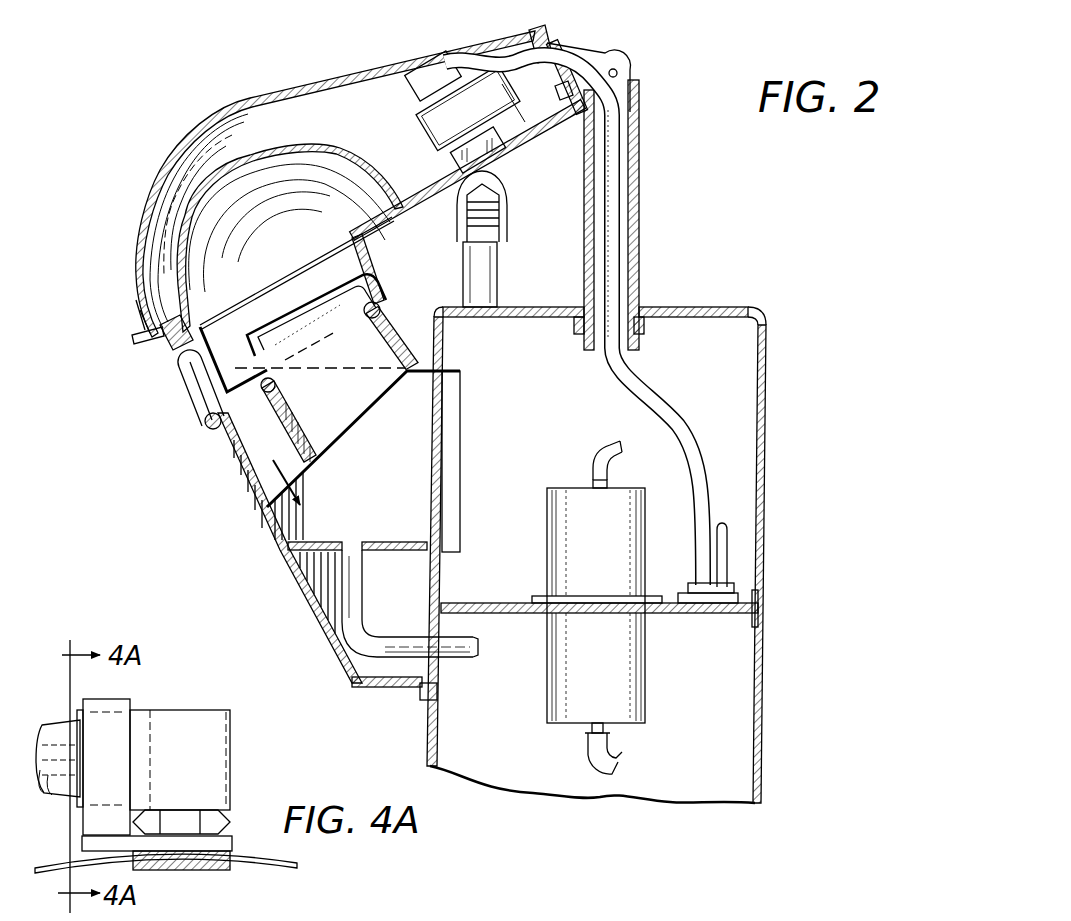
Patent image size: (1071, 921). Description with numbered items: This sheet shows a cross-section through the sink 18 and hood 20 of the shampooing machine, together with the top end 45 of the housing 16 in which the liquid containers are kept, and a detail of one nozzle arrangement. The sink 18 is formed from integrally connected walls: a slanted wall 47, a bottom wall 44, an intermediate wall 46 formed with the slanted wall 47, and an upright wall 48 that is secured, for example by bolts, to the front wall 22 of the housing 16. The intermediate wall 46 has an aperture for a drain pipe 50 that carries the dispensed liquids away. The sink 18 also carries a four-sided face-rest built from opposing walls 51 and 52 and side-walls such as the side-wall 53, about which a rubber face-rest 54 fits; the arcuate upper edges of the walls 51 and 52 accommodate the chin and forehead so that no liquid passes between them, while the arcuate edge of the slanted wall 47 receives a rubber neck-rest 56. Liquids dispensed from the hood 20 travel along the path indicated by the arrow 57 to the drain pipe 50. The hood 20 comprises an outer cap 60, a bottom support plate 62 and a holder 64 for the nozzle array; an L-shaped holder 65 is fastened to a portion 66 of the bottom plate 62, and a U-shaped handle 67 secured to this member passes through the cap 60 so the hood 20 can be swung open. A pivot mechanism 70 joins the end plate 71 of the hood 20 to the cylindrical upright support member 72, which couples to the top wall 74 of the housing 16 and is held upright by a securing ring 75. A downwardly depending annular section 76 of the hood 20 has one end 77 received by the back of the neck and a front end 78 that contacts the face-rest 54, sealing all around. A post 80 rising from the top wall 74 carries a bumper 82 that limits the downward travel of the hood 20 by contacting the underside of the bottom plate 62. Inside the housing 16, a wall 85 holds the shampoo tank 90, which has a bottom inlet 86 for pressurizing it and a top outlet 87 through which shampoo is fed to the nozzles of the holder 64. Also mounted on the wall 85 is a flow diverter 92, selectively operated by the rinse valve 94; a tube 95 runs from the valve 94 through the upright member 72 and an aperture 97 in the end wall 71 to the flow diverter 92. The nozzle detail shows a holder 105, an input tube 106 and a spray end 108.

In FIG. 2, the housing 16 is at (727, 742).
In FIG. 2, the sink 18 is at (242, 527).
In FIG. 2, the hood 20 is at (205, 118).
In FIG. 2, the front wall 22 is at (432, 345).
In FIG. 2, the bottom wall 44 is at (393, 689).
In FIG. 2, the top end 45 is at (767, 383).
In FIG. 2, the intermediate wall 46 is at (370, 542).
In FIG. 2, the slanted wall 47 is at (335, 628).
In FIG. 2, the upright wall 48 is at (433, 472).
In FIG. 2, the drain pipe 50 is at (364, 612).
In FIG. 2, the wall 51 is at (340, 442).
In FIG. 2, the wall 52 is at (370, 342).
In FIG. 2, the side-wall 53 is at (293, 425).
In FIG. 2, the face-rest 54 is at (305, 330).
In FIG. 2, the neck-rest 56 is at (204, 423).
In FIG. 2, the arrow 57 is at (262, 480).
In FIG. 2, the outer cap 60 is at (305, 95).
In FIG. 2, the bottom support plate 62 is at (520, 142).
In FIG. 2, the holder 64 is at (325, 145).
In FIG. 2, the L-shaped holder 65 is at (162, 318).
In FIG. 2, the portion 66 is at (165, 342).
In FIG. 2, the U-shaped handle 67 is at (133, 335).
In FIG. 2, the pivot mechanism 70 is at (632, 58).
In FIG. 2, the end plate 71 is at (550, 32).
In FIG. 2, the cylindrical upright support member 72 is at (640, 156).
In FIG. 2, the top wall 74 is at (690, 307).
In FIG. 2, the securing ring 75 is at (645, 320).
In FIG. 2, the annular section 76 is at (262, 300).
In FIG. 2, the end 77 is at (185, 385).
In FIG. 2, the front end 78 is at (370, 247).
In FIG. 2, the post 80 is at (487, 272).
In FIG. 2, the bumper 82 is at (505, 190).
In FIG. 2, the wall 85 is at (495, 603).
In FIG. 2, the bottom inlet 86 is at (618, 752).
In FIG. 2, the top outlet 87 is at (598, 462).
In FIG. 2, the shampoo tank 90 is at (573, 510).
In FIG. 2, the flow diverter 92 is at (478, 100).
In FIG. 2, the valve 94 is at (712, 603).
In FIG. 2, the tube 95 is at (668, 395).
In FIG. 2, the aperture 97 is at (552, 86).
In FIG. 4A, the holder 105 is at (120, 851).
In FIG. 4A, the input tube 106 is at (62, 745).
In FIG. 4A, the spray end 108 is at (228, 822).